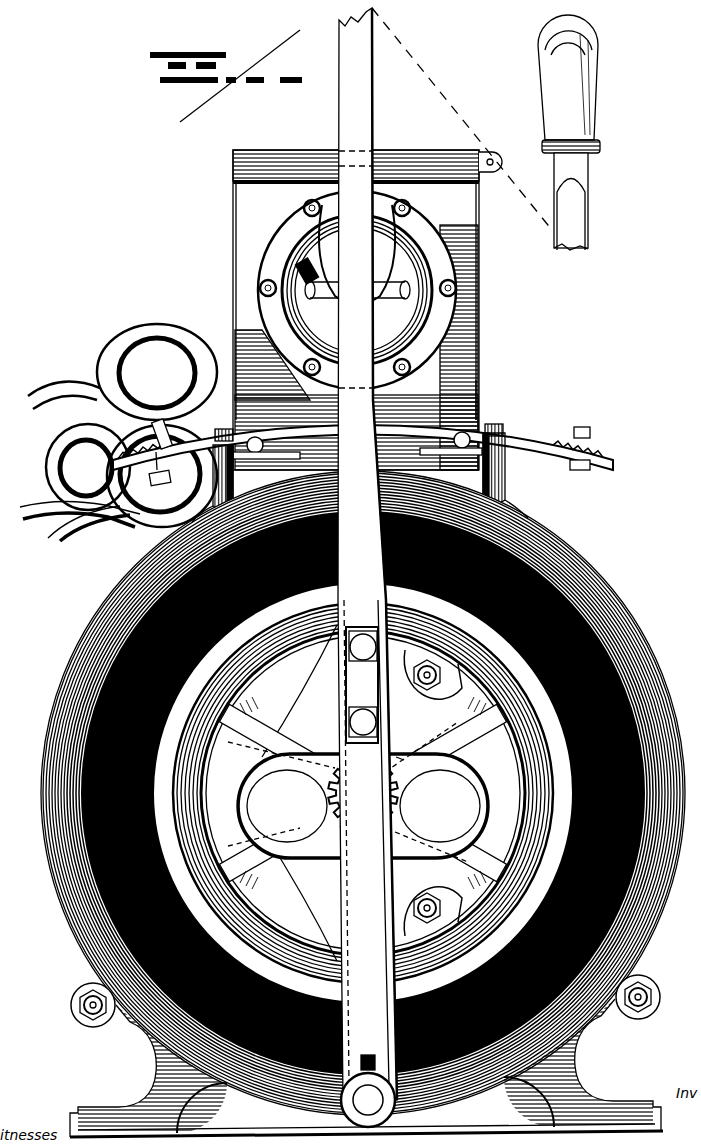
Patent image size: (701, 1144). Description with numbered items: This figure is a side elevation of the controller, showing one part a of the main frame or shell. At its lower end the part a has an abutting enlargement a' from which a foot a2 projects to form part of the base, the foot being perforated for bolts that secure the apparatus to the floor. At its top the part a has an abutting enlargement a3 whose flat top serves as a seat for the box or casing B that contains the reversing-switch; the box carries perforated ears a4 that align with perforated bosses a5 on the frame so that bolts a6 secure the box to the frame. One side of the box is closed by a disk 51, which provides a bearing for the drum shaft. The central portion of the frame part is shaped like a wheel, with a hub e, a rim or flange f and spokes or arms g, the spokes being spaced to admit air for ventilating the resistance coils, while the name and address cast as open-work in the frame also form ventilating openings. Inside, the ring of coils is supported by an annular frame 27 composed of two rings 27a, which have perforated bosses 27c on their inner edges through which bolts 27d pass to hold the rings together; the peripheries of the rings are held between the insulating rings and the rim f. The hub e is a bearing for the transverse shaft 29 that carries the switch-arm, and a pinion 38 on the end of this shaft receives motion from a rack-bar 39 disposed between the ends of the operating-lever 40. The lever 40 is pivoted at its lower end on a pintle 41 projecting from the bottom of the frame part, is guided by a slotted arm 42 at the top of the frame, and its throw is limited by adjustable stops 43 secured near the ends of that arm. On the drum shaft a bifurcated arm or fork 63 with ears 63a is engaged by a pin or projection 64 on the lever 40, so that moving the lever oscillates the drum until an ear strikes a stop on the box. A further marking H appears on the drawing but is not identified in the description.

The box or casing B is at (367, 310).
The disk 51 is at (357, 290).
The bifurcated arm or fork 63 is at (376, 265).
The ears 63a is at (404, 290).
The pin or projection 64 is at (357, 247).
The handle / hand lever H is at (504, 304).
The perforated bosses a5 is at (510, 481).
The perforated ears a4 is at (505, 433).
The adjustable stops 43 is at (560, 432).
The bolts a6 is at (492, 425).
The abutting enlargement a3 is at (505, 455).
The slotted arm 42 is at (482, 386).
The part of the main frame or shell a is at (363, 793).
The foot a2 is at (366, 1068).
The abutting enlargement a' is at (365, 1006).
The annular frame 27 is at (363, 793).
The rim or flange f is at (277, 646).
The rings 27a is at (299, 895).
The spokes or arms g is at (362, 793).
The perforated bosses 27c is at (450, 896).
The bolts 27d is at (428, 894).
The hub e is at (408, 803).
The rack-bar 39 is at (404, 760).
The pinion 38 is at (390, 814).
The transverse shaft 29 is at (362, 793).
The operating-lever 40 is at (367, 554).
The pintle 41 is at (368, 1100).